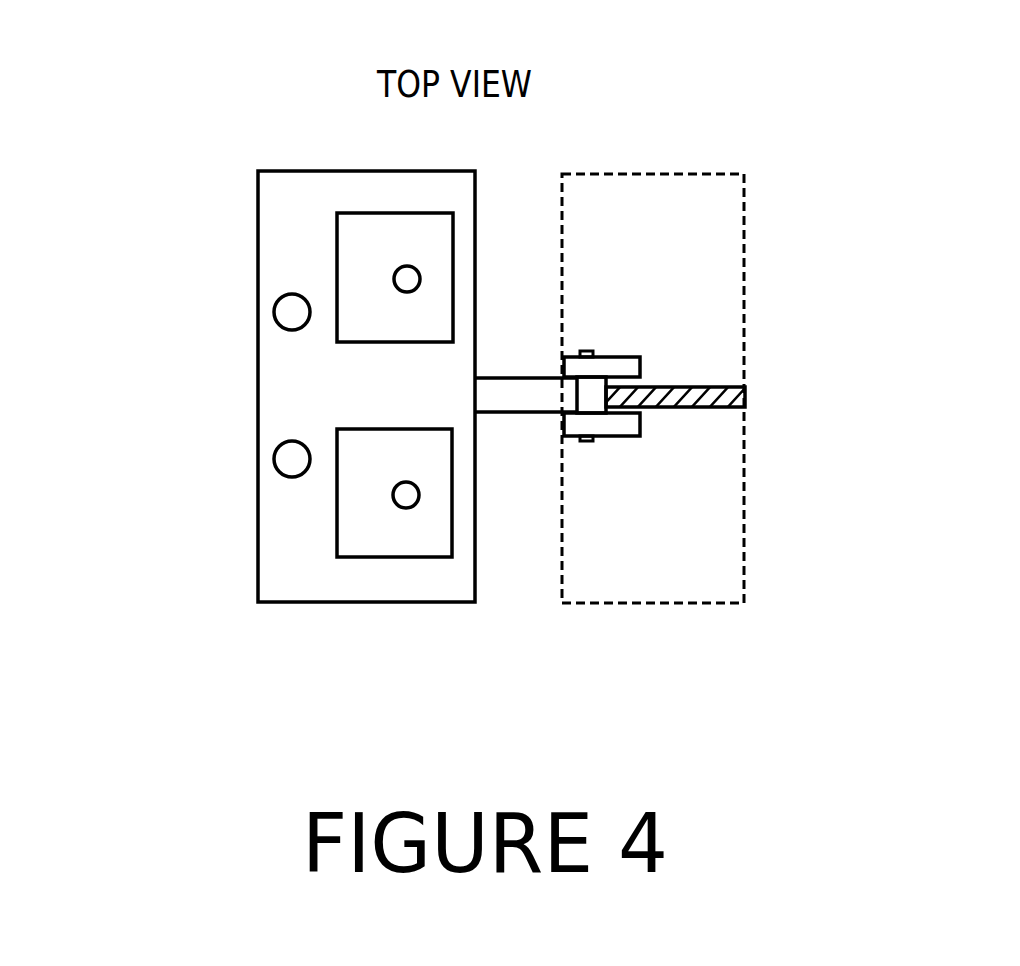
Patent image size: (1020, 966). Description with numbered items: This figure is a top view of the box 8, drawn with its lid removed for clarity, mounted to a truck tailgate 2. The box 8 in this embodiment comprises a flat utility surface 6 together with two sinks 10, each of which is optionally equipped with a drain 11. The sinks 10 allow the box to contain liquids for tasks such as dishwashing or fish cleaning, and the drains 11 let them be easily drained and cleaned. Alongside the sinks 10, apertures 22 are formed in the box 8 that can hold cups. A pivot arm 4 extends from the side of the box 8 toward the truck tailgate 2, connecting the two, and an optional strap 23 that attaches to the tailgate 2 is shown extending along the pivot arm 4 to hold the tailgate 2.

The truck tailgate 2 is at (698, 260).
The pivot arm 4 is at (520, 367).
The flat utility surface 6 is at (300, 382).
The box 8 is at (318, 163).
The sink 10 is at (327, 267).
The drain 11 is at (380, 497).
The apertures 22 is at (270, 301).
The strap 23 is at (752, 397).